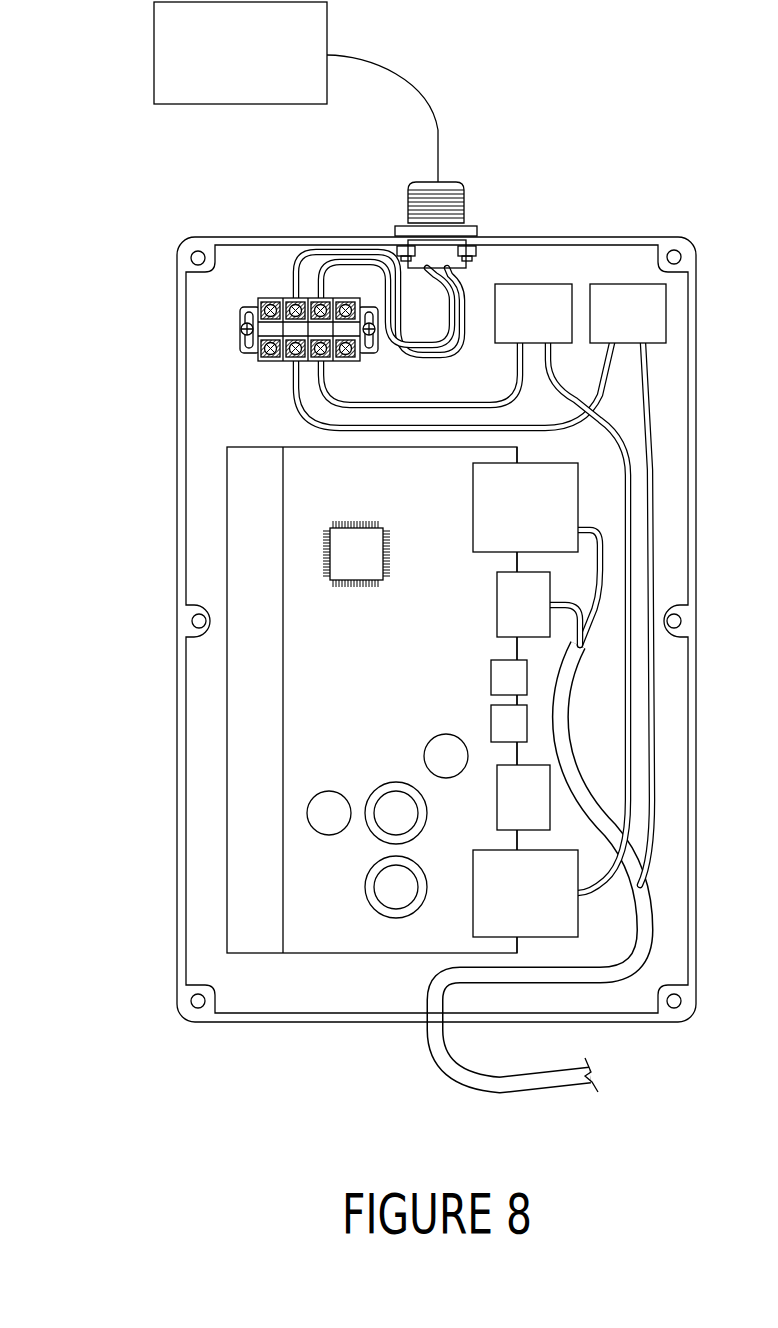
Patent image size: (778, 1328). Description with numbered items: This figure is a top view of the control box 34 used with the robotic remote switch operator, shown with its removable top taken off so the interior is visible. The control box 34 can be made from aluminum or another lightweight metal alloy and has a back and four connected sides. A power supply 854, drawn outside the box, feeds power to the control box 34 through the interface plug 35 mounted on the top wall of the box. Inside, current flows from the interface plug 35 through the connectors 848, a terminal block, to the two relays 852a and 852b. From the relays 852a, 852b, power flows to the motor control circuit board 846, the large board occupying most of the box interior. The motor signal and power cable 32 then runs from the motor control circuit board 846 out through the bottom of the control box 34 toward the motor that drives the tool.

The power supply 854 is at (153, 55).
The interface plug 35 is at (462, 204).
The relay 852a is at (532, 284).
The relay 852b is at (625, 284).
The connectors 848 is at (277, 298).
The motor control circuit board 846 is at (312, 470).
The control box 34 is at (180, 820).
The motor signal and power cable 32 is at (436, 992).